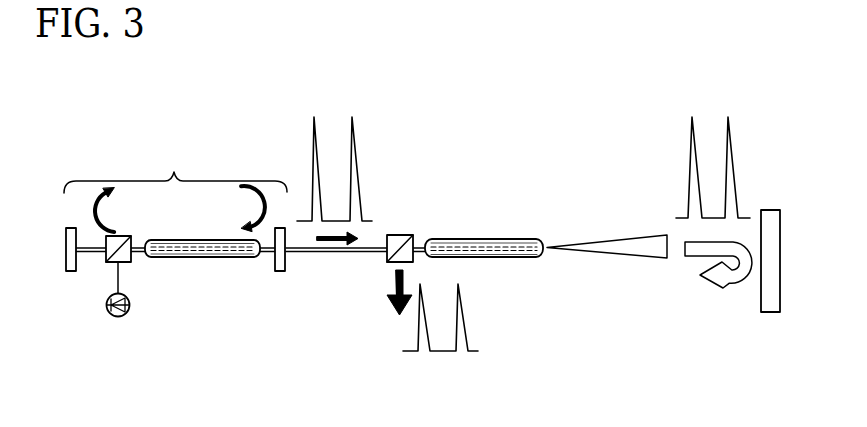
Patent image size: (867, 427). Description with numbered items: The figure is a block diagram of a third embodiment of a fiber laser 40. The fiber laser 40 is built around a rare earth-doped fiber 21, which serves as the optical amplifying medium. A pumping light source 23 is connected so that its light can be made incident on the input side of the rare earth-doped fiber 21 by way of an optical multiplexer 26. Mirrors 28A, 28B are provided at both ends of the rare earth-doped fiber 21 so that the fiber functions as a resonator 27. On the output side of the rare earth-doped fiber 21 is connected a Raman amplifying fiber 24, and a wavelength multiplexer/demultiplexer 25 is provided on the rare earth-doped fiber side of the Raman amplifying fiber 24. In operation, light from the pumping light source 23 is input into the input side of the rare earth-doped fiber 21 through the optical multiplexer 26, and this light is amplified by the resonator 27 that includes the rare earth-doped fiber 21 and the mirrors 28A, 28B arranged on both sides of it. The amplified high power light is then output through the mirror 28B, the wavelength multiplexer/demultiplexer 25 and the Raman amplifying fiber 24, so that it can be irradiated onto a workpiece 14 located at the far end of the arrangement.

The workpiece 14 is at (767, 313).
The rare earth-doped fiber 21 is at (223, 258).
The pumping light source 23 is at (130, 310).
The Raman amplifying fiber 24 is at (483, 238).
The wavelength multiplexer/demultiplexer 25 is at (402, 233).
The optical multiplexer 26 is at (123, 263).
The resonator 27 is at (175, 188).
The mirror 28A is at (71, 271).
The mirror 28B is at (280, 271).
The fiber laser 40 is at (487, 173).